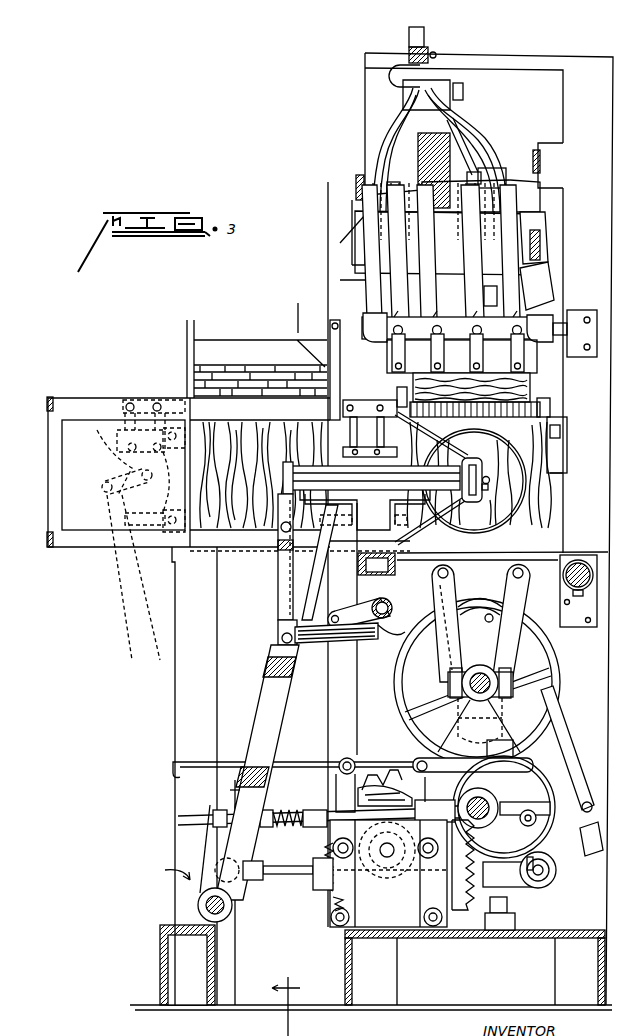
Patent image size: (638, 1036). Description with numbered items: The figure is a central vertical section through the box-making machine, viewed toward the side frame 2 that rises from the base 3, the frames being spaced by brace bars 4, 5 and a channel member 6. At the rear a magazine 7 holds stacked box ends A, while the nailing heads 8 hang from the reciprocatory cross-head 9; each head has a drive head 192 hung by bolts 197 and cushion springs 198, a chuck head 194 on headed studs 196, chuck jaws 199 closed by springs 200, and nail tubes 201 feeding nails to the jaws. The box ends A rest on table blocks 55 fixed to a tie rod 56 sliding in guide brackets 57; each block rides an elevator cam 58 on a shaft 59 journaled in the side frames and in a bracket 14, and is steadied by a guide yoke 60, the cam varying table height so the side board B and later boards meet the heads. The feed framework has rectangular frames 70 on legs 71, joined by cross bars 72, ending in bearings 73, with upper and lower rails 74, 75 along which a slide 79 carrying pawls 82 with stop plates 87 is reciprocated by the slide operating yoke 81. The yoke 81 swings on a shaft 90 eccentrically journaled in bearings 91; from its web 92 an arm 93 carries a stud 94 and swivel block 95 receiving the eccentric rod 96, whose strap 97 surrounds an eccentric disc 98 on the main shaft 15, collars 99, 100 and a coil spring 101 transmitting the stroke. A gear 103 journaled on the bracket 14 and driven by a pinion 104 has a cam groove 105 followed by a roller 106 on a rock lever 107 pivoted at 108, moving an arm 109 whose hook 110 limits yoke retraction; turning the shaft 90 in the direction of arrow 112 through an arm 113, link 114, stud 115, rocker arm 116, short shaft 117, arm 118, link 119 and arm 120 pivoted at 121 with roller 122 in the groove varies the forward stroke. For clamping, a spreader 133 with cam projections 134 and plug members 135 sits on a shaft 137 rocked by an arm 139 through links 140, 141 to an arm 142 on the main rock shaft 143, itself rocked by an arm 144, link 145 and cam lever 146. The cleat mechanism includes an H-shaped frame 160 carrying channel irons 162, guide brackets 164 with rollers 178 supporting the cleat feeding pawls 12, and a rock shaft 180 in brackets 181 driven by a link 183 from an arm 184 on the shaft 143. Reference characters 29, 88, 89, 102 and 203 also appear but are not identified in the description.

The side frame 2 is at (597, 763).
The base 3 is at (583, 933).
The transverse brace bar 4 is at (540, 166).
The transverse brace bar 5 is at (360, 172).
The channel member 6 is at (396, 556).
The magazine 7 is at (197, 335).
The nailing heads 8 is at (500, 167).
The reciprocatory cross-head 9 is at (452, 135).
The cleat feeding pawls 12 is at (560, 403).
The bracket 14 is at (457, 730).
The main shaft 15 is at (453, 897).
The section line 29 is at (291, 660).
The table blocks 55 is at (545, 553).
The horizontal tie rod 56 is at (578, 560).
The guide brackets 57 is at (580, 620).
The elevator cam 58 is at (560, 670).
The shaft 59 is at (490, 672).
The guide yokes 60 is at (520, 593).
The rectangular frames 70 is at (52, 477).
The legs 71 is at (219, 636).
The cross bars 72 is at (47, 405).
The horizontal bearings 73 is at (489, 480).
The upper horizontal rail 74 is at (92, 398).
The lower horizontal rail 75 is at (77, 545).
The slide 79 is at (328, 428).
The slide operating yoke 81 is at (302, 593).
The pawls 82 is at (363, 417).
The stop plate 87 is at (395, 458).
The clamp block 88 is at (345, 410).
The bracket 89 is at (402, 390).
The shaft 90 is at (227, 907).
The bearings 91 is at (198, 917).
The lower transverse web 92 is at (270, 772).
The arm 93 is at (237, 792).
The stud 94 is at (253, 807).
The swivel block 95 is at (238, 835).
The eccentric rod 96 is at (380, 773).
The eccentric strap 97 is at (550, 777).
The eccentric disc 98 is at (540, 800).
The collar 99 is at (215, 827).
The collar 100 is at (317, 813).
The coil spring 101 is at (300, 832).
The block 102 is at (336, 872).
The gear 103 is at (317, 906).
The pinion 104 is at (493, 893).
The cam groove 105 is at (365, 795).
The anti-friction roller 106 is at (320, 858).
The rock lever 107 is at (317, 887).
The pivot 108 is at (333, 927).
The arm 109 is at (317, 763).
The hook 110 is at (175, 780).
The arrow 112 is at (165, 872).
The arm 113 is at (207, 883).
The link 114 is at (280, 878).
The stud 115 is at (556, 868).
The rocker arm 116 is at (549, 886).
The short shaft 117 is at (540, 822).
The arm 118 is at (520, 770).
The link 119 is at (485, 727).
The arm 120 is at (390, 778).
The pivot 121 is at (445, 930).
The antifriction roller 122 is at (403, 874).
The spreader cam element 133 is at (476, 462).
The eccentric cam projections 134 is at (488, 488).
The plug members 135 is at (473, 497).
The horizontal shaft 137 is at (467, 460).
The arm 139 is at (262, 460).
The link 140 is at (300, 542).
The link 141 is at (276, 573).
The arm 142 is at (340, 643).
The main rock shaft 143 is at (382, 597).
The arm 144 is at (398, 625).
The link 145 is at (553, 737).
The cam lever 146 is at (558, 850).
The H-shaped frame 160 is at (550, 473).
The channel irons 162 is at (540, 270).
The guide brackets 164 is at (565, 457).
The roller 178 is at (567, 432).
The rock shaft 180 is at (558, 330).
The brackets 181 is at (590, 327).
The depending link 183 is at (470, 495).
The arm 184 is at (387, 636).
The drive head 192 is at (540, 240).
The chuck head 194 is at (540, 363).
The headed studs 196 is at (530, 292).
The bolts 197 is at (540, 222).
The cushion springs 198 is at (517, 213).
The chuck jaws 199 is at (458, 353).
The springs 200 is at (457, 326).
The nail tubes 201 is at (475, 300).
The tube 203 is at (410, 129).
The box ends A is at (290, 382).
The side board B is at (537, 403).